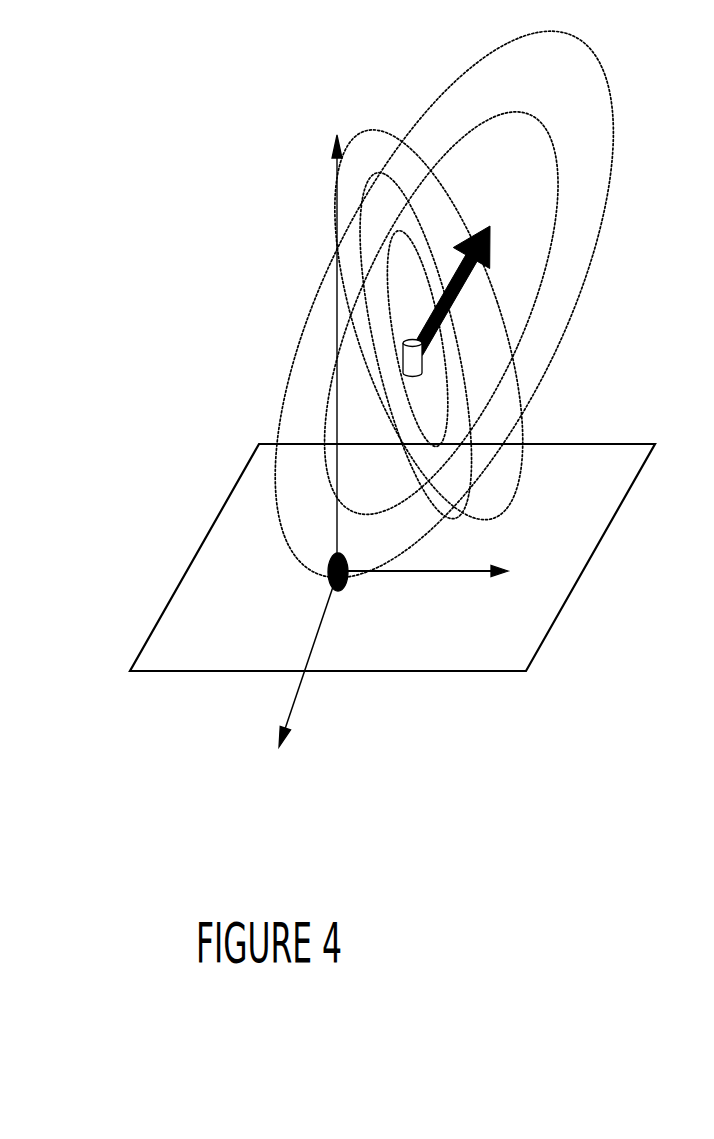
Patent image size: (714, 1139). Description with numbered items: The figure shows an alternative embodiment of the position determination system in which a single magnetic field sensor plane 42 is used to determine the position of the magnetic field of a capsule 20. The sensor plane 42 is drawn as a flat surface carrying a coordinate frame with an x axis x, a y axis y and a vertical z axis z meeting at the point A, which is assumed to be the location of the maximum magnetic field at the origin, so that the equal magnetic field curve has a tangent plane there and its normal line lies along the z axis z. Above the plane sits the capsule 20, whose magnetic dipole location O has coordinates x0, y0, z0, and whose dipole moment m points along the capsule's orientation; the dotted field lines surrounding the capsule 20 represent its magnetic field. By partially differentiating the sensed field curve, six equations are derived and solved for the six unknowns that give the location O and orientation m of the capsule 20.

The capsule 20 is at (389, 352).
The magnetic field sensor plane 42 is at (220, 654).
The point A is at (314, 547).
The magnetic dipole location O is at (520, 382).
The magnetic dipole moment m is at (452, 256).
The x axis x is at (439, 585).
The y axis y is at (308, 688).
The z axis z is at (338, 329).